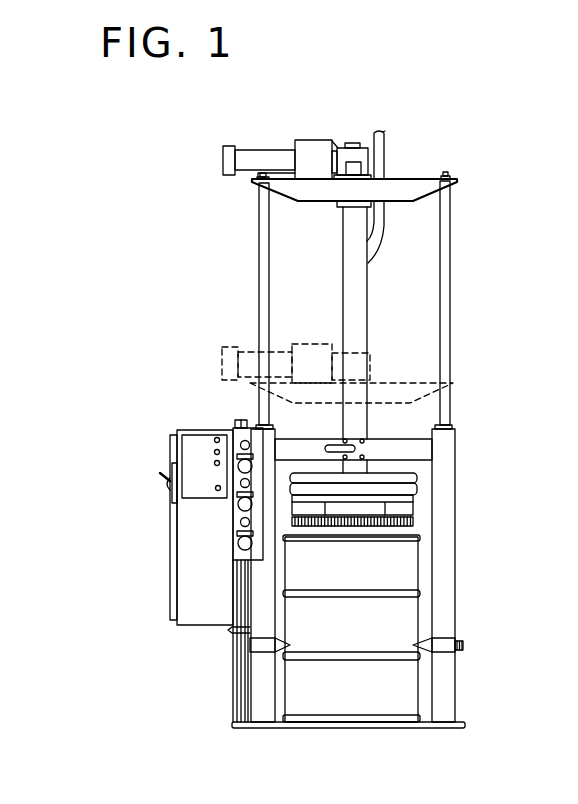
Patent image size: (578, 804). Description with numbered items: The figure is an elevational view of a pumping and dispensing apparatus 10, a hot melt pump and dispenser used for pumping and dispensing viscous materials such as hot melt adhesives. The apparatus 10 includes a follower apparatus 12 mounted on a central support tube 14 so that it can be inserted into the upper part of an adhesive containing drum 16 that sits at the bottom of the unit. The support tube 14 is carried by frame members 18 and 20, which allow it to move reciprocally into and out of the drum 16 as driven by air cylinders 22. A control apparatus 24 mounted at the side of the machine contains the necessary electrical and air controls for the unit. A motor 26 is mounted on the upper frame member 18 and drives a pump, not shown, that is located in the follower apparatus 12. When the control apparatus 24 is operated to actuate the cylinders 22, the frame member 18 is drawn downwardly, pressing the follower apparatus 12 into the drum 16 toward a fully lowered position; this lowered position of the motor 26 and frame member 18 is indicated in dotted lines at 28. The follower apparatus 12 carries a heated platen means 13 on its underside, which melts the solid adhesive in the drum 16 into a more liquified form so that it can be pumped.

The pumping and dispensing apparatus 10 is at (492, 381).
The follower apparatus 12 is at (432, 507).
The heated platen means 13 is at (415, 521).
The central support tube 14 is at (378, 324).
The adhesive containing drum 16 is at (432, 584).
The frame member 18 is at (416, 209).
The frame member 20 is at (425, 456).
The air cylinders 22 is at (464, 629).
The control apparatus 24 is at (157, 554).
The motor 26 is at (321, 134).
The dotted line position 28 is at (214, 371).